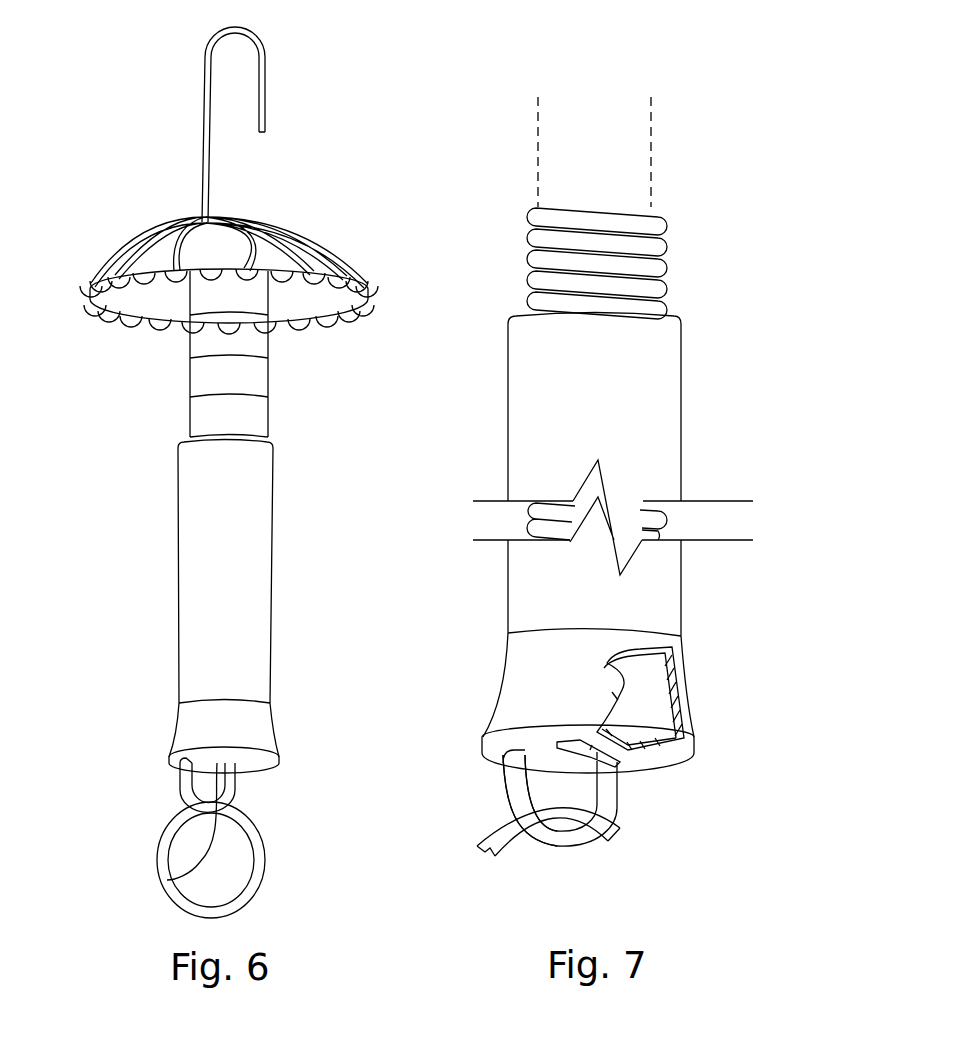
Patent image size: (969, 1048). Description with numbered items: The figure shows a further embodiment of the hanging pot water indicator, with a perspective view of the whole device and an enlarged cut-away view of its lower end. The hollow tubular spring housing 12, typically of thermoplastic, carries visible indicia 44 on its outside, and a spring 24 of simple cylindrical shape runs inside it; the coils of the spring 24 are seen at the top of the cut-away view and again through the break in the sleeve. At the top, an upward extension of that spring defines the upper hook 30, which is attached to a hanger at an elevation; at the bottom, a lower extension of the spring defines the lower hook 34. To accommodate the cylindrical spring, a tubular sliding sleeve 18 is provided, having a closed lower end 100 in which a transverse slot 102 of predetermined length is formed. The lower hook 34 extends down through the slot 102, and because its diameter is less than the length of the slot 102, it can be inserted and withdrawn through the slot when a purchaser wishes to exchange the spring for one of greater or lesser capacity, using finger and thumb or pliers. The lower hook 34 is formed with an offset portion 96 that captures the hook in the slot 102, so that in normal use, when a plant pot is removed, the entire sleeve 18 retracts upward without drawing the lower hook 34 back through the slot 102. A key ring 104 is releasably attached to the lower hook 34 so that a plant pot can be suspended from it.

In FIG. 6, the hollow tubular spring housing 12 is at (213, 378).
In FIG. 6, the upper hook 30 is at (266, 77).
In FIG. 6, the visible indicia 44 is at (270, 399).
In FIG. 6, the tubular sliding sleeve 18 is at (253, 527).
In FIG. 7, the tubular sliding sleeve 18 is at (650, 427).
In FIG. 7, the spring 24 is at (657, 245).
In FIG. 6, the offset portion 96 is at (190, 777).
In FIG. 7, the offset portion 96 is at (503, 762).
In FIG. 6, the closed lower end 100 is at (253, 763).
In FIG. 7, the closed lower end 100 is at (647, 762).
In FIG. 6, the lower hook 34 is at (240, 800).
In FIG. 7, the lower hook 34 is at (607, 795).
In FIG. 6, the transverse slot 102 is at (167, 880).
In FIG. 7, the transverse slot 102 is at (590, 750).
In FIG. 6, the key ring 104 is at (258, 867).
In FIG. 7, the key ring 104 is at (613, 845).